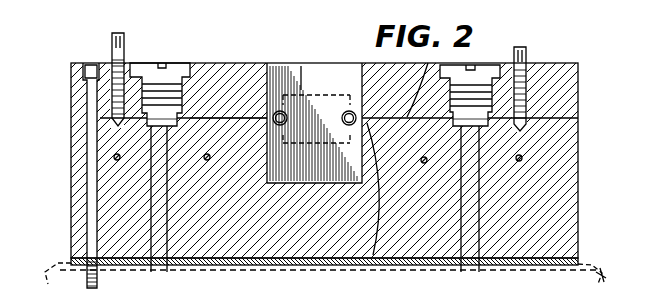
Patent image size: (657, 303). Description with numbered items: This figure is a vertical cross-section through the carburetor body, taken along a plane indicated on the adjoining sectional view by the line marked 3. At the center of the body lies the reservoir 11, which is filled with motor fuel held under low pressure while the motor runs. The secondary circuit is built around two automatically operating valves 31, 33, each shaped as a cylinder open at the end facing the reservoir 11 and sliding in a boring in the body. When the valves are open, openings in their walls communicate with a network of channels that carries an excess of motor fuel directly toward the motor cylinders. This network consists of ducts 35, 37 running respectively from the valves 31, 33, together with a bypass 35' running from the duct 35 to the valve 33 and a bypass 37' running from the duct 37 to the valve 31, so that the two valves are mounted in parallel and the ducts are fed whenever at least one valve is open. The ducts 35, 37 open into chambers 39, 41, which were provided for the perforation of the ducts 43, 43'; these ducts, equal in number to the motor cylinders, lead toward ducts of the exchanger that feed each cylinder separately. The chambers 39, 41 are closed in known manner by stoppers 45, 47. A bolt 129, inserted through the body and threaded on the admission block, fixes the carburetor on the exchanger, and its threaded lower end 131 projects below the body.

The reservoir 11 is at (352, 80).
The automatically operating valve 31 is at (280, 110).
The automatically operating valve 33 is at (349, 110).
The duct 35 is at (228, 75).
The bypass 35' is at (302, 54).
The duct 37 is at (412, 77).
The bypass 37' is at (359, 213).
The chamber 39 is at (114, 130).
The chamber 41 is at (556, 114).
The duct 43 is at (139, 214).
The duct 43' is at (447, 214).
The stopper 45 is at (177, 63).
The stopper 47 is at (478, 65).
The bolt 129 is at (88, 190).
The threaded end of bolt 131 is at (92, 232).
The section line 3- 3 is at (598, 277).